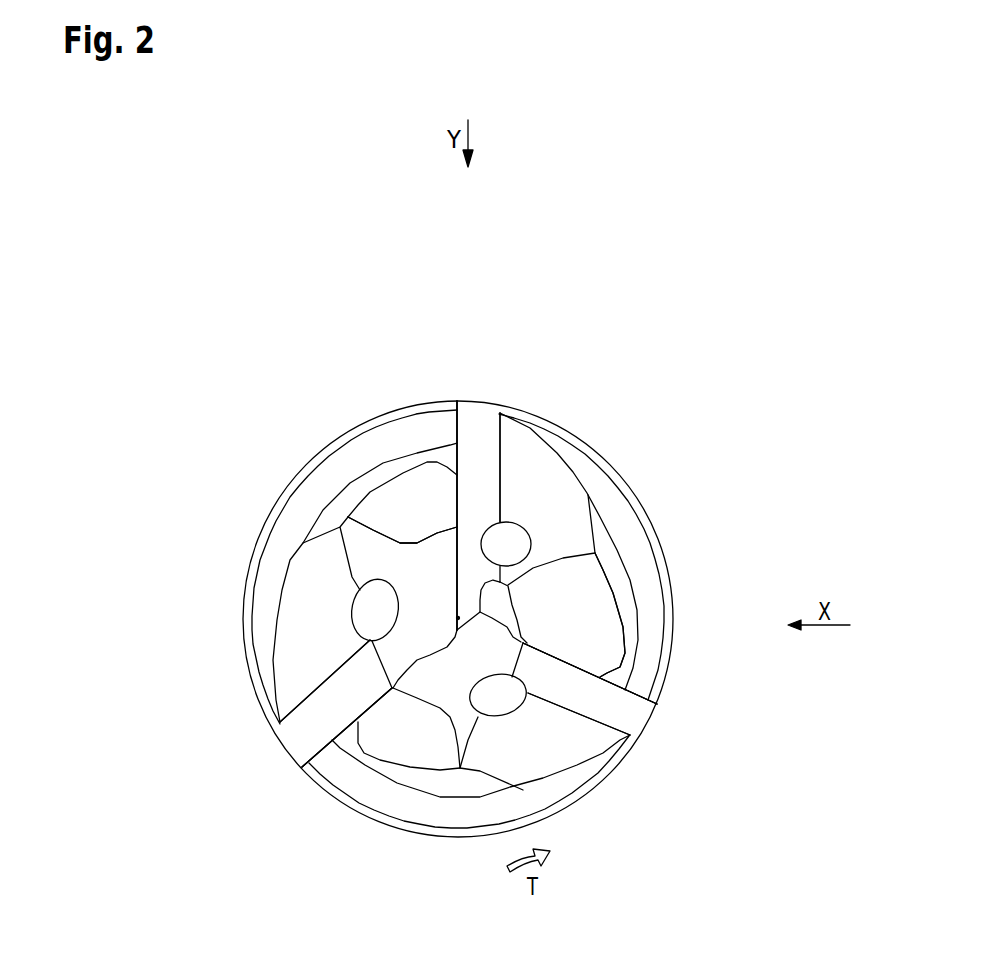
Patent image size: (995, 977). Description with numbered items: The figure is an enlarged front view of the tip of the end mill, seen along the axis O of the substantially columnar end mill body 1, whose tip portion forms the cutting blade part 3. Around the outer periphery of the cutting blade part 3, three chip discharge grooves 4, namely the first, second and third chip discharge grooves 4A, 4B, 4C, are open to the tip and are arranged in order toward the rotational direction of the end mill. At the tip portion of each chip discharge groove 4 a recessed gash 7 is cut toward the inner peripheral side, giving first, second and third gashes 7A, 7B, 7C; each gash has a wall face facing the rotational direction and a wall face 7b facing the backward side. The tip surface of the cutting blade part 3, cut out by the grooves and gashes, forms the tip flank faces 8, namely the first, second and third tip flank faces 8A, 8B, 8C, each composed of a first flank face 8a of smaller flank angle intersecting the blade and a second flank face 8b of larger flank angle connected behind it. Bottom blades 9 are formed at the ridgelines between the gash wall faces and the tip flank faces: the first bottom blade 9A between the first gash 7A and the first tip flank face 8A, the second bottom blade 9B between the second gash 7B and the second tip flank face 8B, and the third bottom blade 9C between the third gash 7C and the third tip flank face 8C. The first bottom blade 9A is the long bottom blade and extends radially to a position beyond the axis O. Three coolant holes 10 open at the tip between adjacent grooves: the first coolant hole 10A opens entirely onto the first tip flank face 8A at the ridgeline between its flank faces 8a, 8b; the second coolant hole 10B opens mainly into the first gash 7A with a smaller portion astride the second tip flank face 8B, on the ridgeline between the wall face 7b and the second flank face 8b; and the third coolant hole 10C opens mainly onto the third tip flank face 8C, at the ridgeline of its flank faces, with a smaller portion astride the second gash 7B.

The end mill body 1 is at (400, 619).
The cutting blade part 3 is at (246, 512).
The chip discharge grooves 4 is at (502, 629).
The first chip discharge groove 4A is at (357, 452).
The second chip discharge groove 4B is at (365, 783).
The third chip discharge groove 4C is at (638, 535).
The gash 7 is at (496, 604).
The first gash 7A is at (425, 567).
The second gash 7B is at (445, 682).
The third gash 7C is at (592, 630).
The wall face of the gash facing the backward side in the rotational direction 7b is at (377, 545).
The tip flank faces 8 is at (462, 508).
The first tip flank face 8A is at (552, 247).
The second tip flank face 8B is at (170, 705).
The third tip flank face 8C is at (755, 751).
The first flank face 8a is at (483, 423).
The second flank face 8b is at (530, 447).
The bottom blades 9 is at (506, 578).
The first bottom blade 9A is at (457, 428).
The second bottom blade 9B is at (325, 753).
The third bottom blade 9C is at (645, 699).
The coolant holes 10 is at (415, 617).
The first coolant hole 10A is at (513, 542).
The second coolant hole 10B is at (370, 612).
The third coolant hole 10C is at (507, 702).
The axis O is at (458, 618).